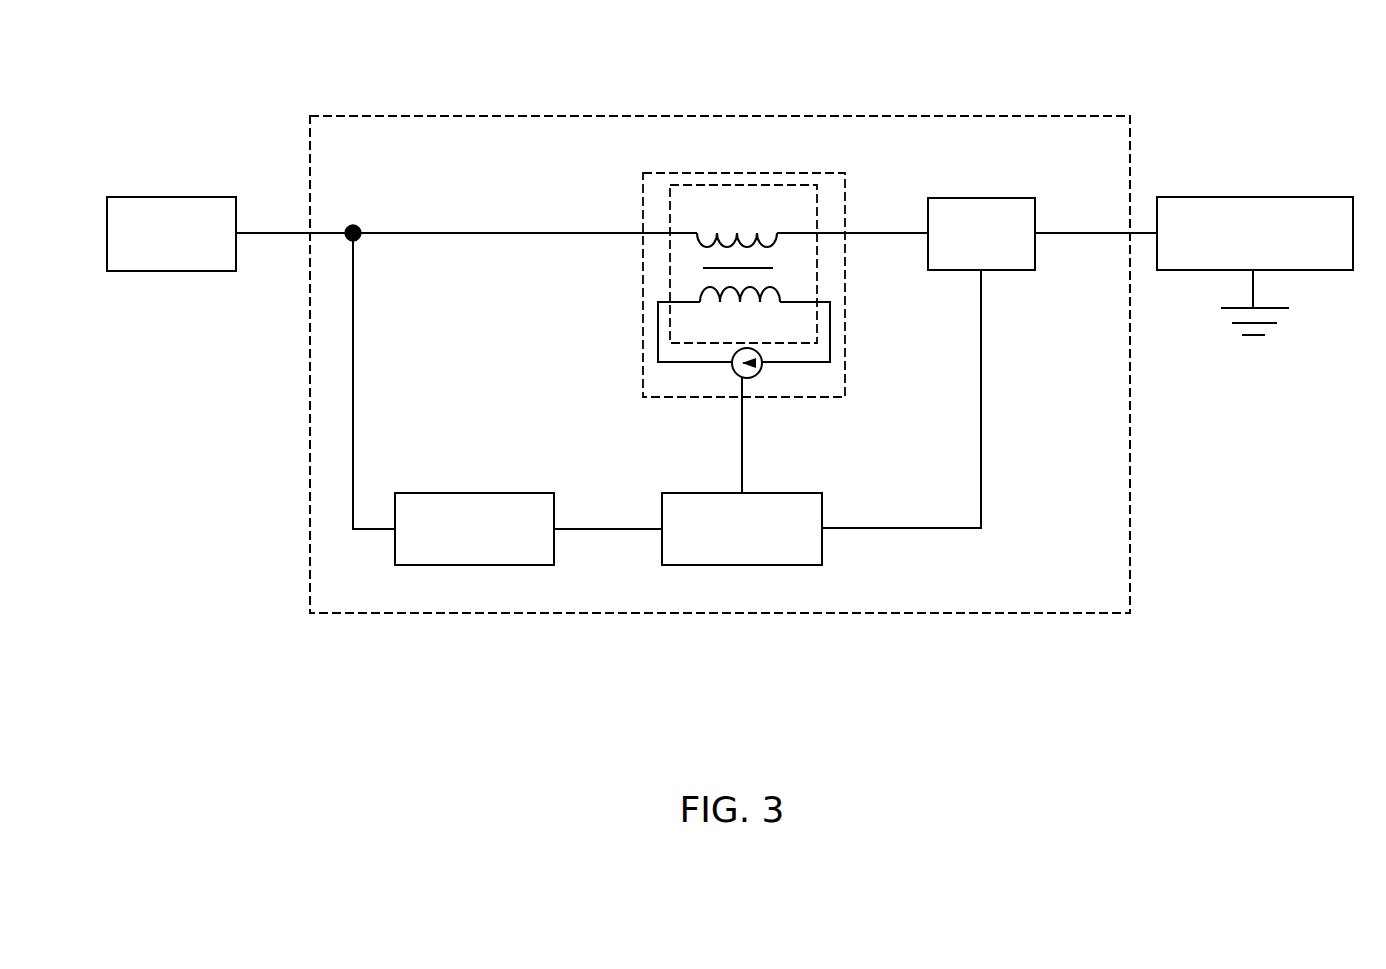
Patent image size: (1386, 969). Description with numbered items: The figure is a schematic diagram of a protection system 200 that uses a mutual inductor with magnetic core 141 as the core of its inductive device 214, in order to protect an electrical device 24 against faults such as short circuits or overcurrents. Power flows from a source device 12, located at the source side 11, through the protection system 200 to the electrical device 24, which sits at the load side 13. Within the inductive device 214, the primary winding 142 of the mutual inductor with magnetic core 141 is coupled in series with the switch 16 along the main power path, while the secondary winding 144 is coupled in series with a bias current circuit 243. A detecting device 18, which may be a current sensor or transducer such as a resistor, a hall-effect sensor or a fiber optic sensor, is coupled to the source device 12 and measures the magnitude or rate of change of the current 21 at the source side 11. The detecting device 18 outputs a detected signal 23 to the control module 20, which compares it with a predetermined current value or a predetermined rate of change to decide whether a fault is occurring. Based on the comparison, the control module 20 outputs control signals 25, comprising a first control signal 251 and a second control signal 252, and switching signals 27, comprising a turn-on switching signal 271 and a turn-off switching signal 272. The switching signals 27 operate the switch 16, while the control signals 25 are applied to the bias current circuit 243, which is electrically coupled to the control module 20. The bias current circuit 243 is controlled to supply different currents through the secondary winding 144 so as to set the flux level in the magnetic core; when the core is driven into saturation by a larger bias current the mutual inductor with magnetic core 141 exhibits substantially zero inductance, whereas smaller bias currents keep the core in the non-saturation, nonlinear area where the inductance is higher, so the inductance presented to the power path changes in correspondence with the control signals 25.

The protection system 200 is at (345, 98).
The source device 12 is at (158, 210).
The source side 11 is at (298, 291).
The current 21 is at (353, 350).
The mutual inductor with magnetic core 141 is at (710, 269).
The primary winding 142 is at (745, 242).
The secondary winding 144 is at (740, 295).
The inductive device 214 is at (642, 297).
The bias current circuit 243 is at (742, 372).
The control signals 25 is at (742, 467).
The first control signal 251 is at (817, 455).
The second control signal 252 is at (817, 455).
The detecting device 18 is at (518, 556).
The detected signal 23 is at (607, 528).
The control module 20 is at (795, 553).
The switching signals 27 is at (981, 423).
The turn-on switching signal 271 is at (1058, 405).
The turn-off switching signal 272 is at (1058, 405).
The switch 16 is at (966, 216).
The electrical device 24 is at (1245, 215).
The load side 13 is at (1200, 292).